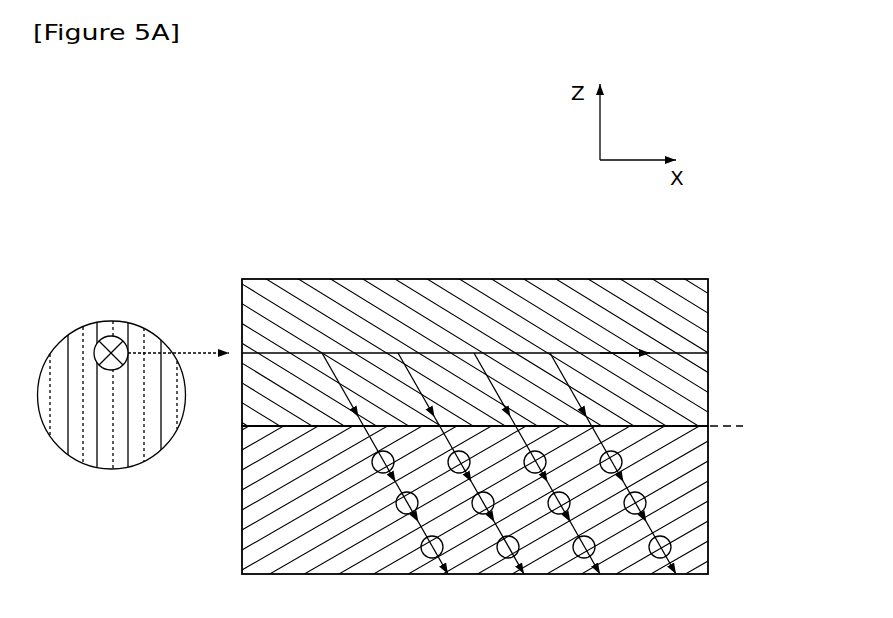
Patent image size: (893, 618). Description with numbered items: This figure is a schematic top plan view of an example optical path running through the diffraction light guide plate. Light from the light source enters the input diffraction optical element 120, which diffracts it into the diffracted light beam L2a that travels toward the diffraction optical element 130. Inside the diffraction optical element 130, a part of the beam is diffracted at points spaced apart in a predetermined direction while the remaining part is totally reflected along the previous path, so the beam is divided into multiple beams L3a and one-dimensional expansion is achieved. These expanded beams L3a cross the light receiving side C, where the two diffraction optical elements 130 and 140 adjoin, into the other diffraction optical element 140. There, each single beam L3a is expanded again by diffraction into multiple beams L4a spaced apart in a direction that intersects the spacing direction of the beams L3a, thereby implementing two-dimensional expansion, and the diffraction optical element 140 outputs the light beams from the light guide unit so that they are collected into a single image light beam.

The input diffraction optical element 120 is at (72, 332).
The diffraction optical element 130 is at (708, 330).
The diffraction optical element 140 is at (708, 498).
The light receiving side C is at (508, 428).
The diffracted light beam L2a is at (418, 341).
The expanded light beam / multiple beams L3a is at (499, 463).
The multiple beams L4a is at (377, 470).